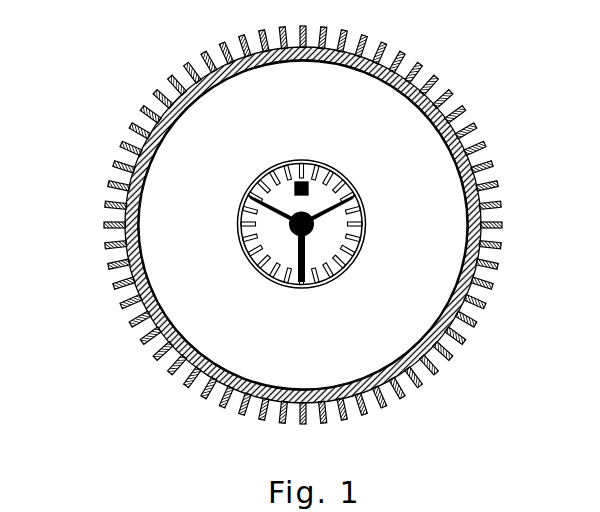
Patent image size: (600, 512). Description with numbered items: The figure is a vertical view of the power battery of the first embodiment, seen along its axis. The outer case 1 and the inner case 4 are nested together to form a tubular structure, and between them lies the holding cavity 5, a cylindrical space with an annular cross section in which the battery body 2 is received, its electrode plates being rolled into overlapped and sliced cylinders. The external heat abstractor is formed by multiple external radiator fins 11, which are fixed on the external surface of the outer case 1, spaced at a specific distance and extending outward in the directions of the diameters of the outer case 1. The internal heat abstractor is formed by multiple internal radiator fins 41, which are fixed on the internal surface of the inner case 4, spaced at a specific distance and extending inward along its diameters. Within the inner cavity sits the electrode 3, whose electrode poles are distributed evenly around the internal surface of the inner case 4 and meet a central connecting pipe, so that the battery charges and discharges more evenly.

The outer case 1 is at (155, 335).
The external radiator fins 11 is at (166, 370).
The battery body 2 is at (170, 283).
The electrode 3 is at (306, 230).
The inner case 4 is at (362, 258).
The internal radiator fins 41 is at (353, 230).
The holding cavity 5 is at (412, 178).